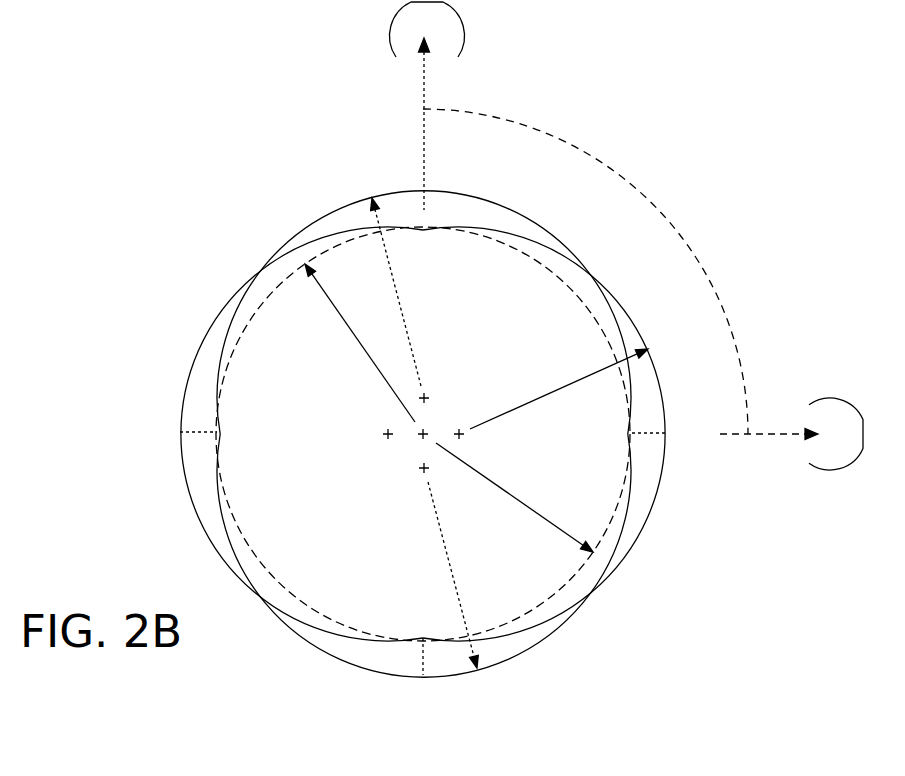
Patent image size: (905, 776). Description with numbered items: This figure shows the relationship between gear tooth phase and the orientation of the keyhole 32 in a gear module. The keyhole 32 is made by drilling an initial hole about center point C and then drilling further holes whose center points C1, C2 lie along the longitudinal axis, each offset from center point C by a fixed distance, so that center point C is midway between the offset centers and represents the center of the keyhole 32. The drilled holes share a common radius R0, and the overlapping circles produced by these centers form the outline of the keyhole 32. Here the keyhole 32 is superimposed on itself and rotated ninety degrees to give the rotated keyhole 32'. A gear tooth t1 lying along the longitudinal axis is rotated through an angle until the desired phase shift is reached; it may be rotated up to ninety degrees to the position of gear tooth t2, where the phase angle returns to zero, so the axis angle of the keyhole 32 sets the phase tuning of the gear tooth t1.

The keyhole 32 is at (423, 403).
The keyhole (rotated) 32' is at (405, 434).
The center point C is at (422, 438).
The center point of second drilled hole C1 is at (428, 396).
The center point of offset hole C2 is at (387, 438).
The radius R0 is at (476, 433).
The gear tooth t1 is at (441, 106).
The gear tooth position t2 is at (791, 417).